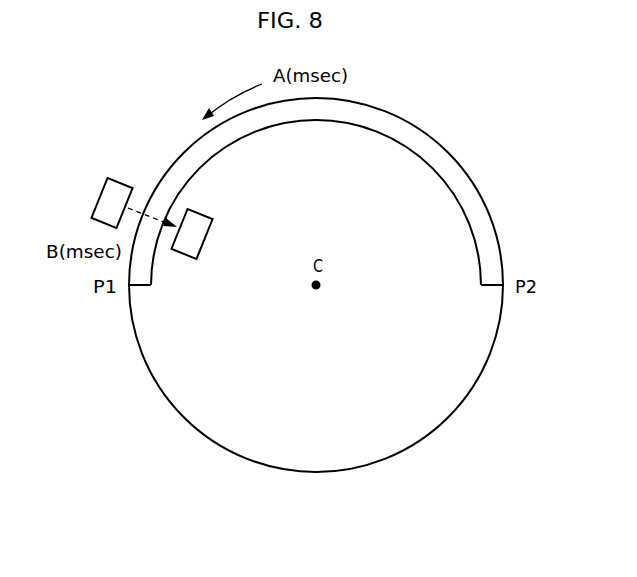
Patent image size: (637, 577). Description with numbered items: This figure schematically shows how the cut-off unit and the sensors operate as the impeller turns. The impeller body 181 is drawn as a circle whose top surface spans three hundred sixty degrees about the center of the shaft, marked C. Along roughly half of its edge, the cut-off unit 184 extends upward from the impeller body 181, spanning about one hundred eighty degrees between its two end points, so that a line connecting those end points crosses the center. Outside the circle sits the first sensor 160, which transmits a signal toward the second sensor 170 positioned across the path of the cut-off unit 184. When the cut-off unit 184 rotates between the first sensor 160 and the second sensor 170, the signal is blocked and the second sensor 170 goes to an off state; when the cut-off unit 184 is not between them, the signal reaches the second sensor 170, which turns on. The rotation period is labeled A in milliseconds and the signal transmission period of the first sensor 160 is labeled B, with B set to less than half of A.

The first sensor 160 is at (104, 190).
The second sensor 170 is at (201, 218).
The impeller body 181 is at (404, 402).
The cut-off unit 184 is at (439, 152).